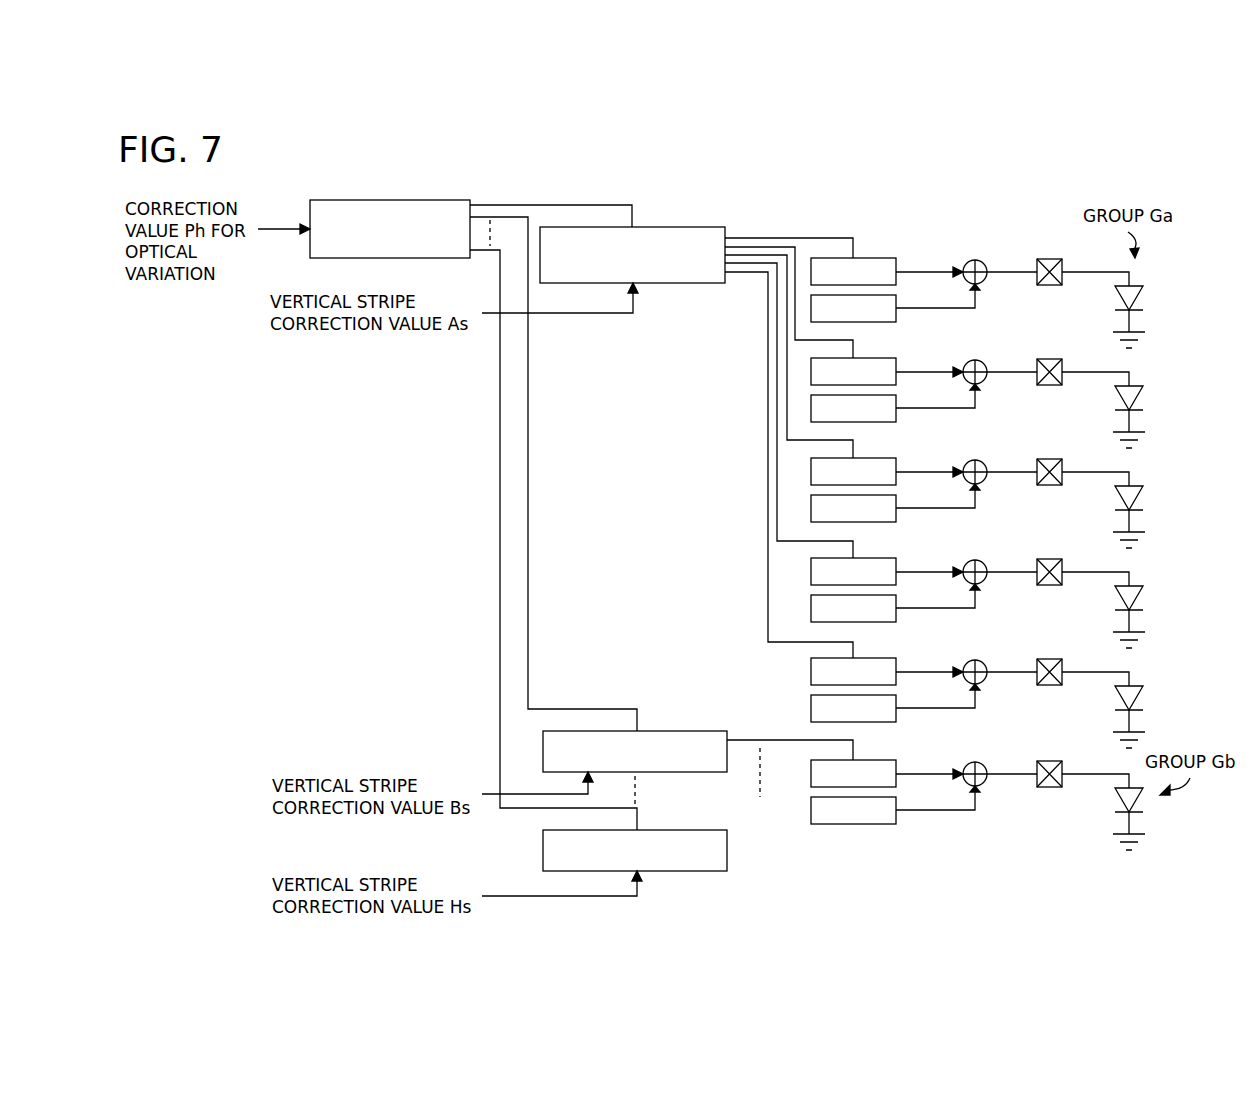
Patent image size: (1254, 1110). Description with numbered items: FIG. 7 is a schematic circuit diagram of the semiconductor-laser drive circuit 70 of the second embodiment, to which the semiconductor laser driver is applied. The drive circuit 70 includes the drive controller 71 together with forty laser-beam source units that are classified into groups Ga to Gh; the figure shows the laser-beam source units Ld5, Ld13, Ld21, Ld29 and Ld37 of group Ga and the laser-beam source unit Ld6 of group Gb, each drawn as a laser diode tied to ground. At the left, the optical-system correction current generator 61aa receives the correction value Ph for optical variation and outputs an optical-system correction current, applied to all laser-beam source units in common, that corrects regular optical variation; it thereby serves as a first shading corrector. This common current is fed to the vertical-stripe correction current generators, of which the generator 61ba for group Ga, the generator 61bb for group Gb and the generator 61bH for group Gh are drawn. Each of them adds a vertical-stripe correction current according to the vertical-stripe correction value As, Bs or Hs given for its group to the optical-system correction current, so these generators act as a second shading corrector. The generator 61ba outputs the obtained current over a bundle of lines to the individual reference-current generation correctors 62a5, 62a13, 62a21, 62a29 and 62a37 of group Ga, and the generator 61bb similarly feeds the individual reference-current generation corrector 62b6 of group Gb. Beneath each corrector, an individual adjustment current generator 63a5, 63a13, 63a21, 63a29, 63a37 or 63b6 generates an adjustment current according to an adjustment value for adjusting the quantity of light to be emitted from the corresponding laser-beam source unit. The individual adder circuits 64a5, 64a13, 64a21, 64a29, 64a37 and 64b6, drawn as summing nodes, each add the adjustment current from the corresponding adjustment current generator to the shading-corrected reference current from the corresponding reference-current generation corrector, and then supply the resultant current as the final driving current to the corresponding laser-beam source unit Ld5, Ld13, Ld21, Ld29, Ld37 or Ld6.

The optical-system correction current generator 61aa is at (440, 200).
The vertical-stripe correction current generator 61ba is at (700, 227).
The vertical-stripe correction current generator 61bb is at (672, 731).
The vertical-stripe correction current generator 61bH is at (672, 830).
The drive controller 71 is at (800, 232).
The semiconductor-laser drive circuit 70 is at (1035, 205).
The individual reference-current generation corrector 62a5 is at (870, 258).
The individual adjustment current generator 63a5 is at (811, 306).
The individual adder circuit 64a5 is at (985, 261).
The individual reference-current generation corrector 62a13 is at (811, 372).
The individual adjustment current generator 63a13 is at (811, 408).
The individual adder circuit 64a13 is at (985, 361).
The individual reference-current generation corrector 62a21 is at (811, 472).
The individual adjustment current generator 63a21 is at (811, 508).
The individual adder circuit 64a21 is at (985, 461).
The individual reference-current generation corrector 62a29 is at (811, 572).
The individual adjustment current generator 63a29 is at (811, 608).
The individual adder circuit 64a29 is at (985, 561).
The individual reference-current generation corrector 62a37 is at (811, 672).
The individual adjustment current generator 63a37 is at (811, 708).
The individual adder circuit 64a37 is at (985, 661).
The individual reference-current generation corrector 62b6 is at (897, 766).
The individual adjustment current generator 63b6 is at (897, 818).
The individual adder circuit 64b6 is at (985, 763).
The laser-beam source unit Ld5 is at (1143, 286).
The laser-beam source unit Ld13 is at (1143, 386).
The laser-beam source unit Ld21 is at (1143, 486).
The laser-beam source unit Ld29 is at (1143, 586).
The laser-beam source unit Ld37 is at (1143, 686).
The laser-beam source unit Ld6 is at (1142, 798).